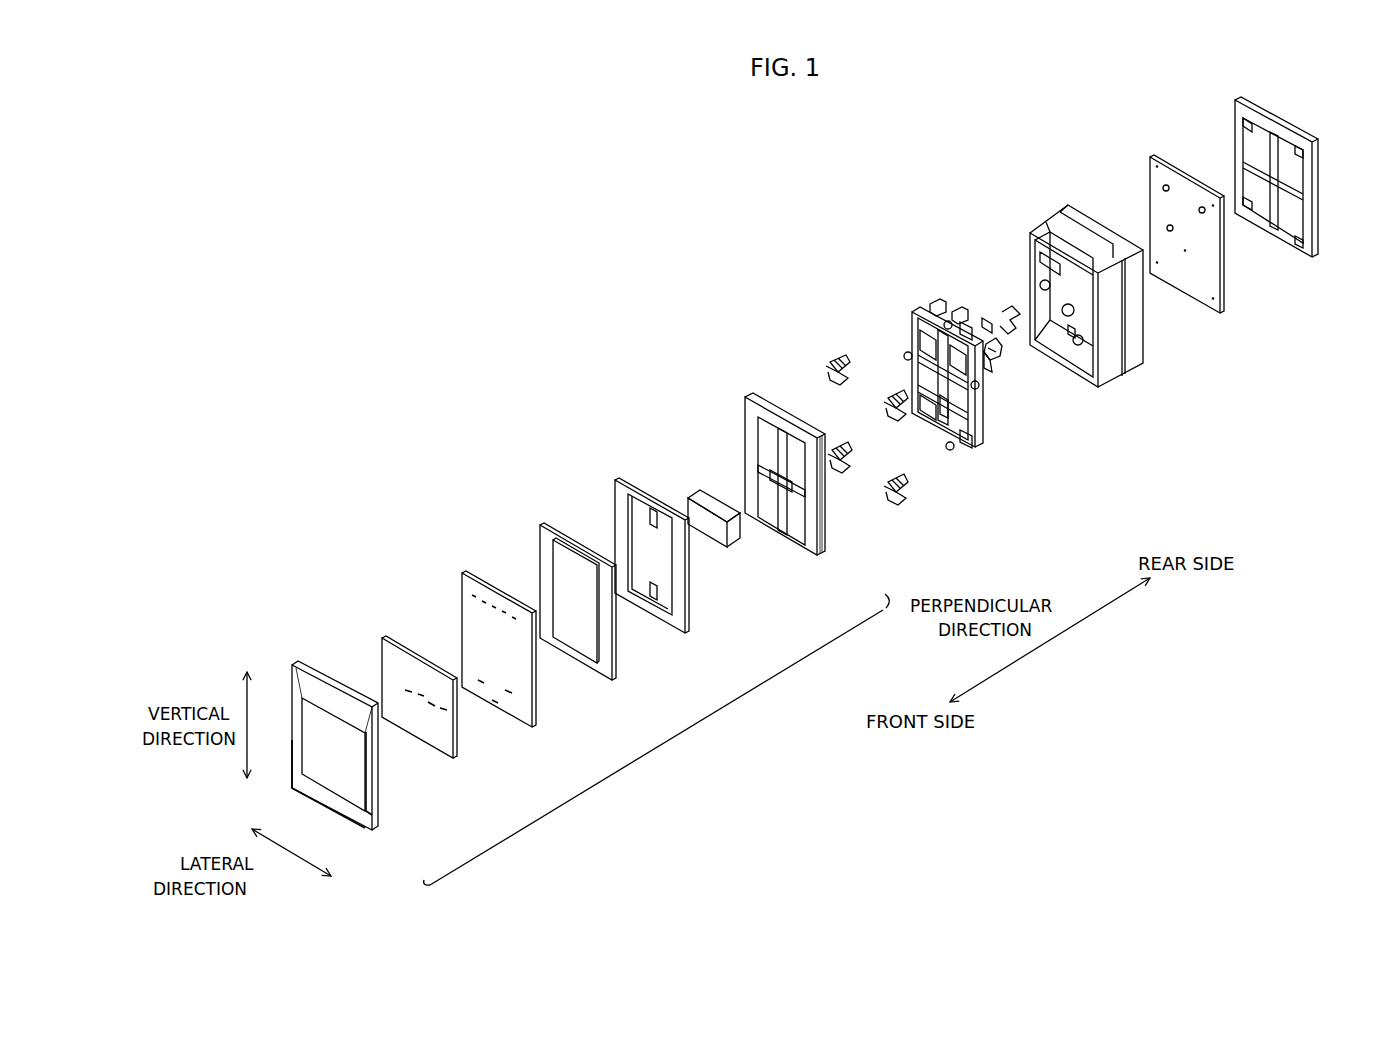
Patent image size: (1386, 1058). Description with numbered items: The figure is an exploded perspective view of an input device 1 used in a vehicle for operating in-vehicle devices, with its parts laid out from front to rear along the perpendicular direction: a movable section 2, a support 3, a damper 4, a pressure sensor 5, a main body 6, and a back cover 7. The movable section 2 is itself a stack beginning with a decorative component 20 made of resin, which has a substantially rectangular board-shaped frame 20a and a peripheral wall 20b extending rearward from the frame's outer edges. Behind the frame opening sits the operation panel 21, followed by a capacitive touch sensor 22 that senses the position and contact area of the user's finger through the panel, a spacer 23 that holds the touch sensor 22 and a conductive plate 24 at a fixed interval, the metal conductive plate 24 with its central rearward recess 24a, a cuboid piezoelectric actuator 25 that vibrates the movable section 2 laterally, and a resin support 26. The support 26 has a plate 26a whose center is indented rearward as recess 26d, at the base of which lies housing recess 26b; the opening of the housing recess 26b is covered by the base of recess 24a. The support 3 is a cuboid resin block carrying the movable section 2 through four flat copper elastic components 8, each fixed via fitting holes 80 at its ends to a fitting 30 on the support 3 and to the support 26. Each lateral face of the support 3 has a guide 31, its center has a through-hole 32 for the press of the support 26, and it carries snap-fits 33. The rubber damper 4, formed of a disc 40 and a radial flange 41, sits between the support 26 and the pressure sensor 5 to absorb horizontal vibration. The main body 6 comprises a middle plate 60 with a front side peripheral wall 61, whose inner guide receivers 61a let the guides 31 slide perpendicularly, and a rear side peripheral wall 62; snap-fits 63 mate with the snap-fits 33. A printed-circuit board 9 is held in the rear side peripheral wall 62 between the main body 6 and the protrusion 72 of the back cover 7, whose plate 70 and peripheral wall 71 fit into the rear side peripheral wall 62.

The input device 1 is at (636, 236).
The movable section 2 is at (655, 748).
The support 3 is at (952, 372).
The damper 4 is at (1004, 375).
The pressure sensor 5 is at (1016, 330).
The main body 6 is at (1084, 316).
The back cover 7 is at (1295, 204).
The elastic component 8 is at (866, 430).
The printed-circuit board 9 is at (1224, 298).
The decorative component 20 is at (372, 765).
The frame 20a is at (312, 790).
The peripheral wall 20b is at (402, 773).
The operation panel 21 is at (458, 755).
The touch sensor 22 is at (537, 722).
The spacer 23 is at (614, 675).
The conductive plate 24 is at (679, 587).
The recess 24a is at (656, 565).
The actuator 25 is at (737, 548).
The support 26 is at (773, 503).
The plate 26a is at (748, 484).
The housing recess 26b is at (768, 472).
The recess 26d is at (770, 432).
The fitting 30 is at (970, 322).
The guide 31 is at (948, 321).
The through-hole 32 is at (944, 410).
The snap-fit 33 is at (934, 302).
The disc 40 is at (994, 354).
The flange 41 is at (990, 318).
The middle plate 60 is at (1085, 272).
The front side peripheral wall 61 is at (1118, 372).
The guide receiver 61a is at (1040, 280).
The rear side peripheral wall 62 is at (1146, 344).
The snap-fit 63 is at (1062, 348).
The plate 70 is at (1290, 148).
The peripheral wall 71 is at (1314, 208).
The protrusion 72 is at (1272, 190).
The fitting hole 80 is at (848, 380).